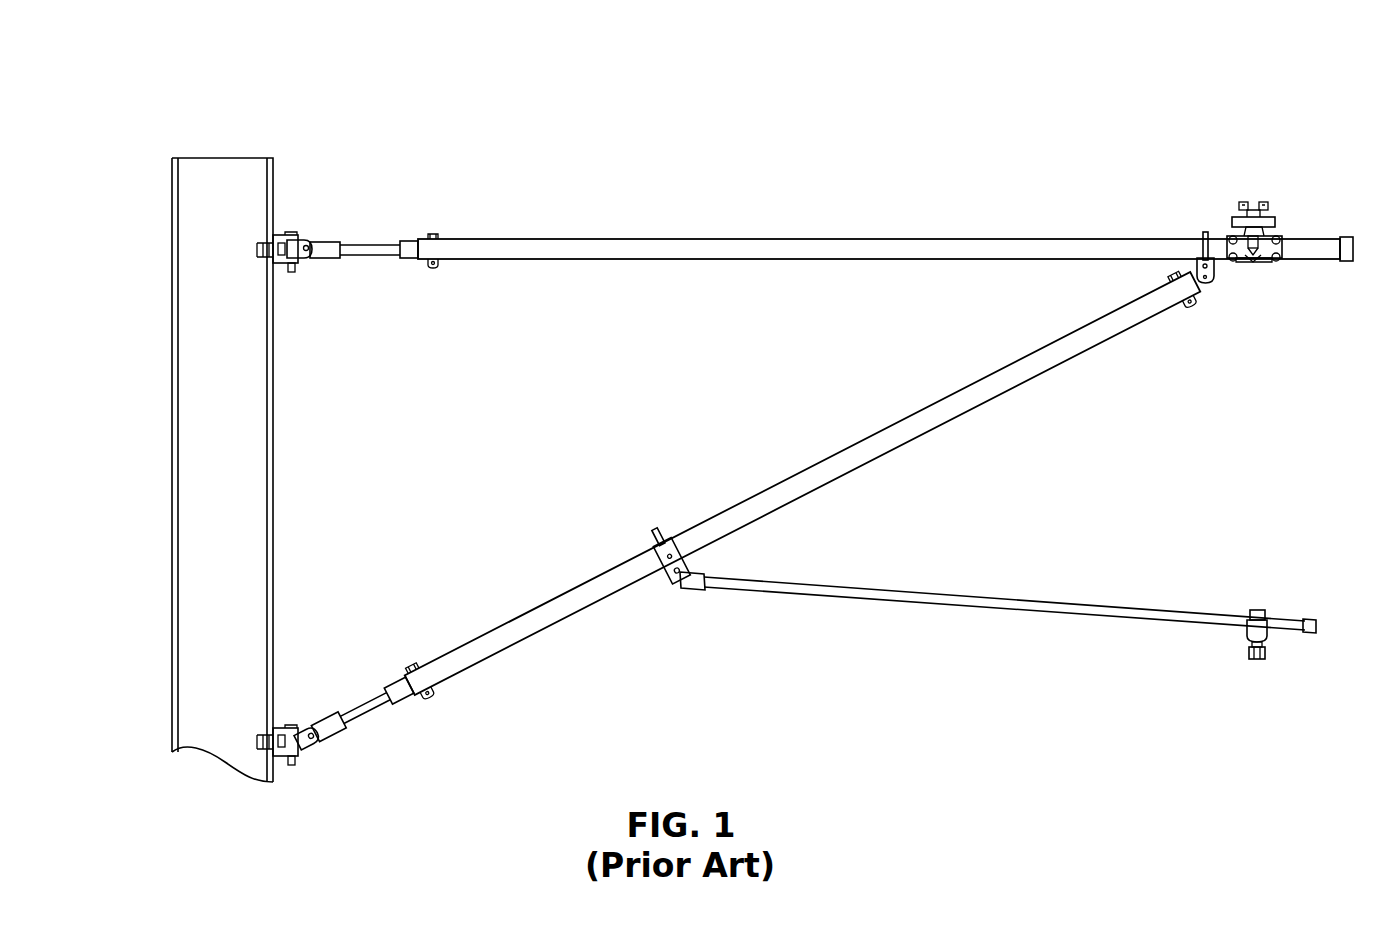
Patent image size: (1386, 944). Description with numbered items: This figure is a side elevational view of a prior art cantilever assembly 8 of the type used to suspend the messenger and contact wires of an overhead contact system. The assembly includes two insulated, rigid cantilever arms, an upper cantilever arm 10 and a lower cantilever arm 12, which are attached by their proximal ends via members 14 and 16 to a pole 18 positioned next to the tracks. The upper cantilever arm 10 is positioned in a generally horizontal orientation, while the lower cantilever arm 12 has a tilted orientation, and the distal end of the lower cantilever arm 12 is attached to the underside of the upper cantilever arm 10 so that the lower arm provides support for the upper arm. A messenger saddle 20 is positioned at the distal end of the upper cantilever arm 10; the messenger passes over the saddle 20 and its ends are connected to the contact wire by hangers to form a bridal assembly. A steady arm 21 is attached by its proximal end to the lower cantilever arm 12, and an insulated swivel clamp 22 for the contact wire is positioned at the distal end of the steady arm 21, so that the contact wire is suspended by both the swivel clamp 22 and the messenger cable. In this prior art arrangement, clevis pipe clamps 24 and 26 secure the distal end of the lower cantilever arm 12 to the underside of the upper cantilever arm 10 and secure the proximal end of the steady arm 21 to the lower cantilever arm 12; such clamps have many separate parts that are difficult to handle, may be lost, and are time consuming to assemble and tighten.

The cantilever assembly 8 is at (378, 57).
The upper cantilever arm 10 is at (711, 238).
The lower cantilever arm 12 is at (820, 465).
The member 14 is at (281, 236).
The member 16 is at (279, 763).
The pole 18 is at (190, 413).
The messenger saddle 20 is at (1267, 212).
The steady arm 21 is at (862, 585).
The insulated swivel clamp 22 is at (1265, 616).
The clevis pipe clamp 24 is at (1199, 256).
The clevis pipe clamp 26 is at (660, 541).